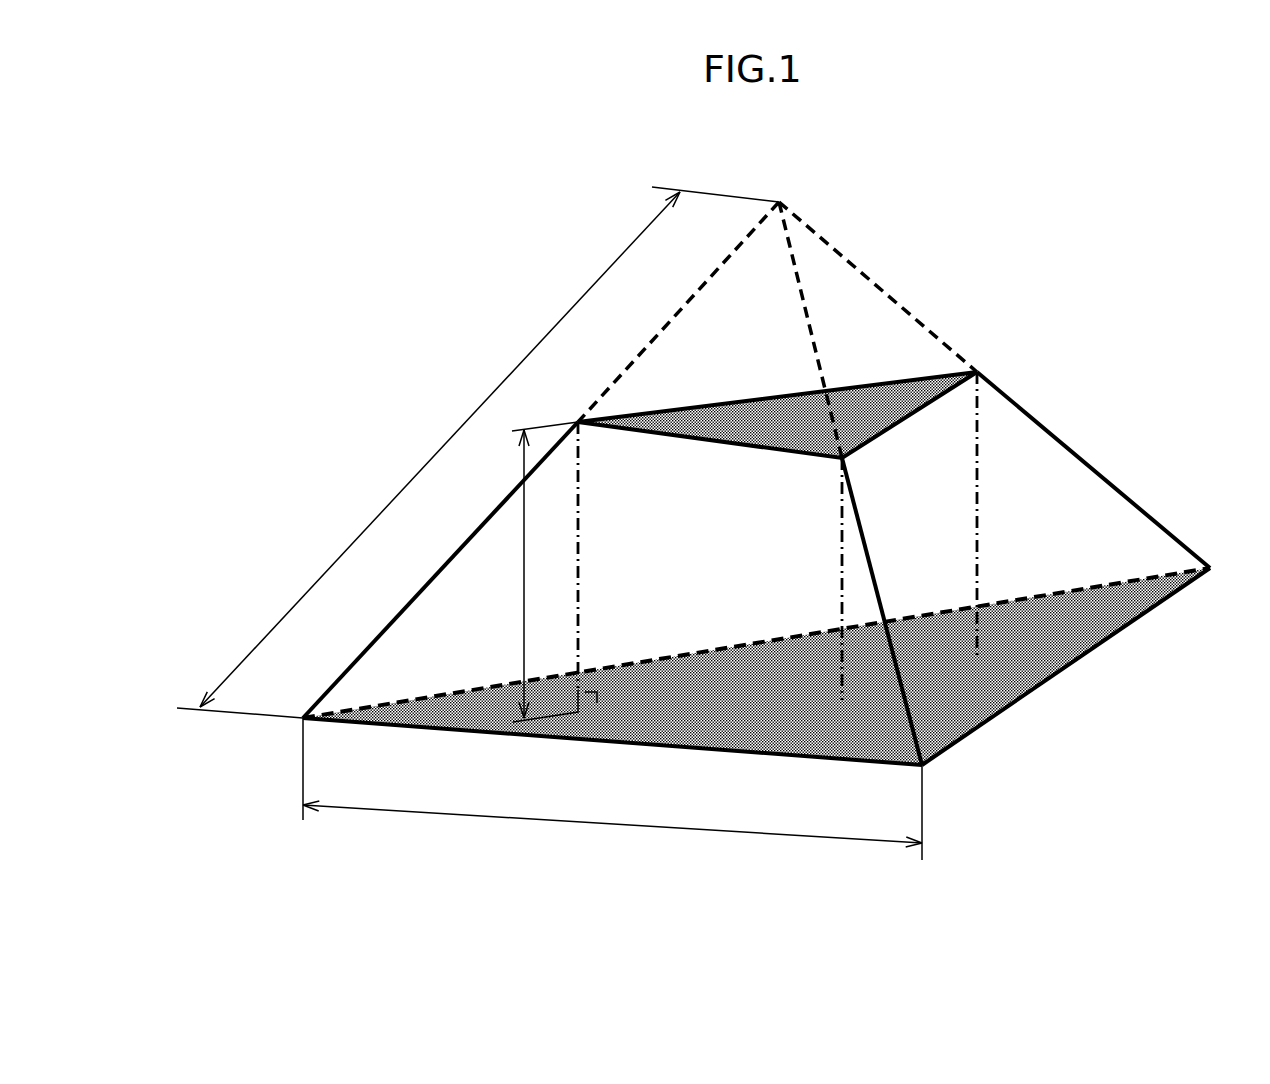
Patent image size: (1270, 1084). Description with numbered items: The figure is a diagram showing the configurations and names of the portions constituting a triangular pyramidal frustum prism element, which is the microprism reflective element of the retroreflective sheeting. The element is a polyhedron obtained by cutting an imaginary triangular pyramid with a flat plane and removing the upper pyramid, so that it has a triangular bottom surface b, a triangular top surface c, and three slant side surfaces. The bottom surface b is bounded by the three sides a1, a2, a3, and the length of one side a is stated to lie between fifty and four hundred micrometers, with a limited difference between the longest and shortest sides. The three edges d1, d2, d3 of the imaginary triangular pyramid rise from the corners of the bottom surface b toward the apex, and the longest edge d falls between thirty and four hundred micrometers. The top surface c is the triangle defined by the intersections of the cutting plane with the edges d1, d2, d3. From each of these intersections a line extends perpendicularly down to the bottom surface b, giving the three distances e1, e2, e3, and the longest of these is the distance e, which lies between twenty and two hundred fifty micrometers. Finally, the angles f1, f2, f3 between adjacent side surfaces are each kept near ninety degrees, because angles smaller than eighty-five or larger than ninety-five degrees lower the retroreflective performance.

The length of side of bottom surface a is at (472, 818).
The bottom surface b is at (1008, 668).
The top surface c is at (880, 395).
The longest edge of imaginary triangular pyramid d is at (572, 306).
The distance between bottom surface and top surface e is at (533, 605).
The side of triangular bottom surface a1 is at (612, 755).
The side of triangular bottom surface a2 is at (1066, 666).
The side of triangular bottom surface a3 is at (756, 643).
The edge of imaginary triangular pyramid d1 is at (678, 312).
The edge of imaginary triangular pyramid d2 is at (808, 330).
The edge of imaginary triangular pyramid d3 is at (878, 287).
The distance between bottom surface and top surface e1 is at (598, 555).
The distance between bottom surface and top surface e2 is at (820, 579).
The distance between bottom surface and top surface e3 is at (995, 516).
The angle between adjacent side surfaces f1 is at (490, 567).
The angle between adjacent side surfaces f2 is at (852, 603).
The angle between adjacent side surfaces f3 is at (1087, 508).